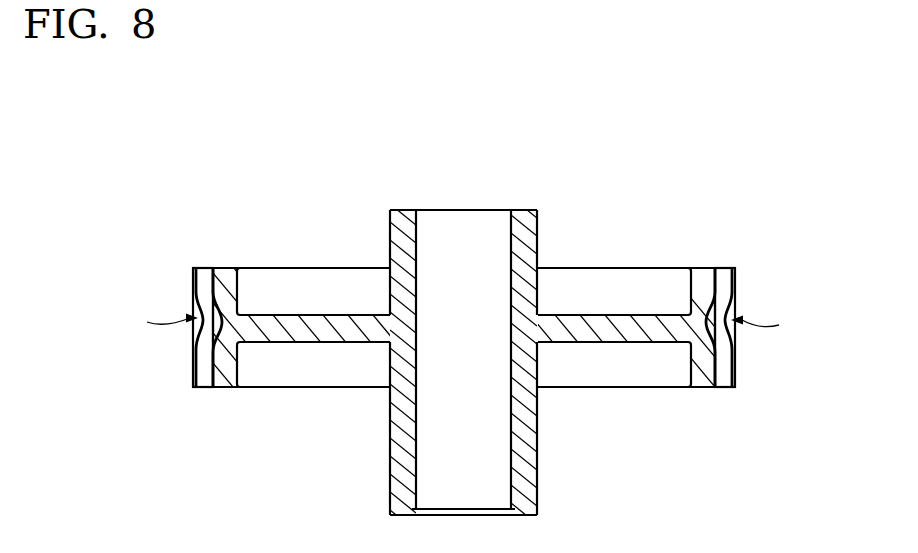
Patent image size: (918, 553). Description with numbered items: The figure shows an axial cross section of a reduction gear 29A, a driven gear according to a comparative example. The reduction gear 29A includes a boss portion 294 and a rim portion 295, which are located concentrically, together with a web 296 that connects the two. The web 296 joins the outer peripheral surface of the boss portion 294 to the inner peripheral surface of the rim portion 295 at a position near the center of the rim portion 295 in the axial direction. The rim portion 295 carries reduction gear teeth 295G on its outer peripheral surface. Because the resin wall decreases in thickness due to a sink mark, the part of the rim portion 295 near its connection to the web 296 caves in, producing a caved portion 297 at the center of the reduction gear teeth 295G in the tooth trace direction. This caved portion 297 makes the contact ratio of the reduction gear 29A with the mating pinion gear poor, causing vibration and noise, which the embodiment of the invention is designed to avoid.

The reduction gear 29A is at (658, 170).
The boss portion 294 is at (539, 237).
The rim portion 295 is at (231, 270).
The reduction gear teeth 295G is at (203, 271).
The web 296 is at (615, 313).
The caved portion 297 is at (461, 318).